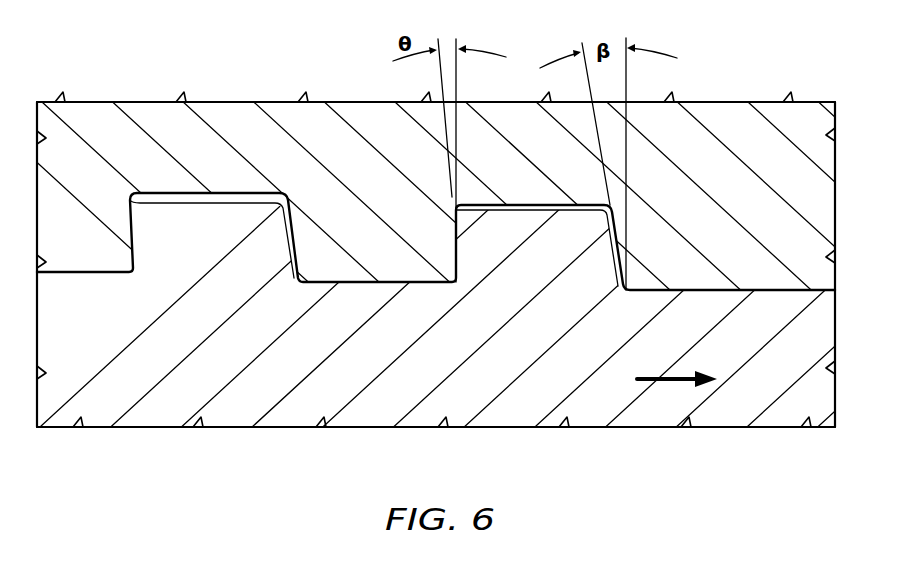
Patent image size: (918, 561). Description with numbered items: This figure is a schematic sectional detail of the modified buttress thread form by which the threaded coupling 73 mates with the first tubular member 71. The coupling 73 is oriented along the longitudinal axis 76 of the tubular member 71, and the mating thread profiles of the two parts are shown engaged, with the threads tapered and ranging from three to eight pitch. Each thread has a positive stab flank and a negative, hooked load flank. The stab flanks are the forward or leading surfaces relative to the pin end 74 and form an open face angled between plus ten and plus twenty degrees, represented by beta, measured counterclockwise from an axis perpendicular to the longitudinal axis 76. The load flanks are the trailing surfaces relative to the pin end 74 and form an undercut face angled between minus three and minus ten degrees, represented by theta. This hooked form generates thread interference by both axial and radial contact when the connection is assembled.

The threaded coupling 73 is at (238, 113).
The first tubular member 71 is at (238, 417).
The longitudinal axis 76 is at (426, 475).
The pin end 74 is at (680, 378).